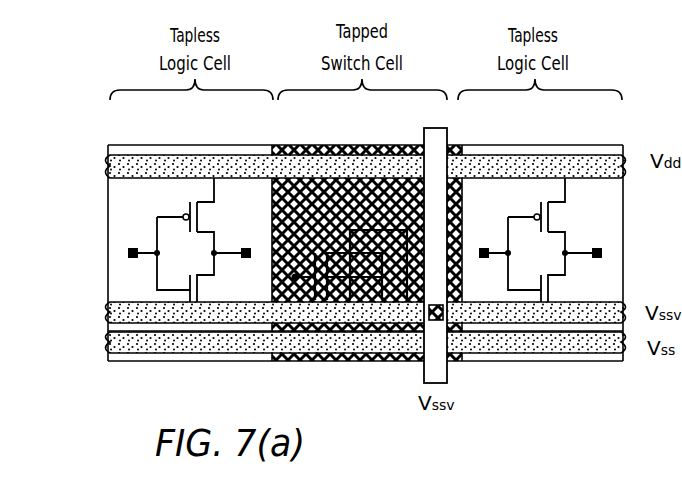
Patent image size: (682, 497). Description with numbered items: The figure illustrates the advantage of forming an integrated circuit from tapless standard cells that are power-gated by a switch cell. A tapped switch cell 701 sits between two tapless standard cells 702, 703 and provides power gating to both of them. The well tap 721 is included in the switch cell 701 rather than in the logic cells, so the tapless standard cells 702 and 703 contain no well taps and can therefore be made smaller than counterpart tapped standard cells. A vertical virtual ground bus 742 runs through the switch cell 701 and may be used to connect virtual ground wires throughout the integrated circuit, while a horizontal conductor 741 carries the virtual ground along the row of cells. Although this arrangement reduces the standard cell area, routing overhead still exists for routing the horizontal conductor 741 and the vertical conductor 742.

The switch cell 701 is at (371, 146).
The tapless standard cell 702 is at (218, 146).
The tapless standard cell 703 is at (568, 146).
The well tap 721 is at (355, 362).
The horizontal conductor 741 is at (108, 306).
The vertical virtual ground bus 742 is at (447, 370).